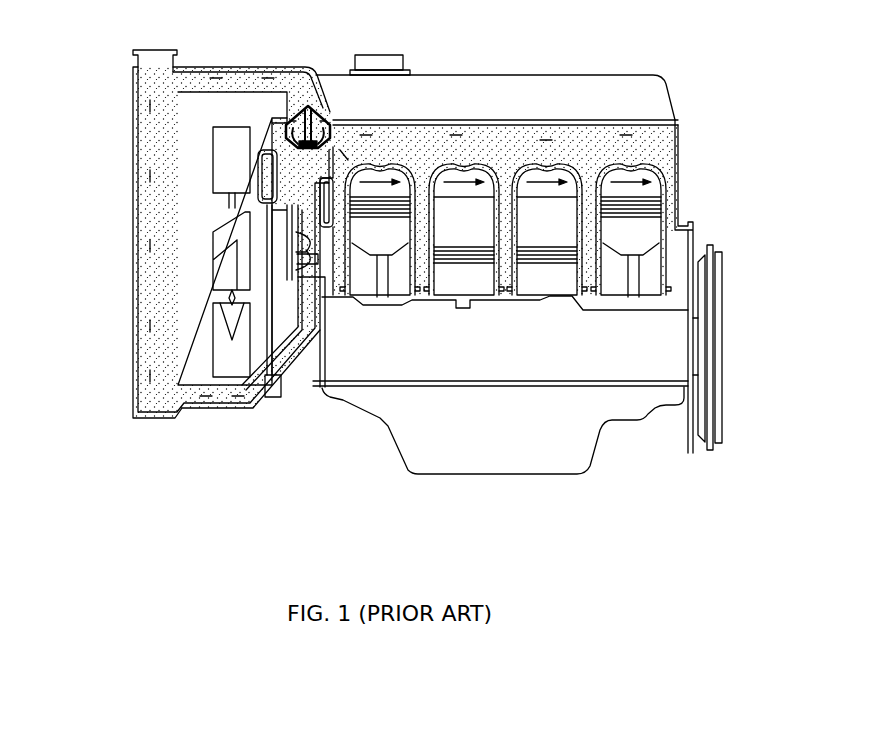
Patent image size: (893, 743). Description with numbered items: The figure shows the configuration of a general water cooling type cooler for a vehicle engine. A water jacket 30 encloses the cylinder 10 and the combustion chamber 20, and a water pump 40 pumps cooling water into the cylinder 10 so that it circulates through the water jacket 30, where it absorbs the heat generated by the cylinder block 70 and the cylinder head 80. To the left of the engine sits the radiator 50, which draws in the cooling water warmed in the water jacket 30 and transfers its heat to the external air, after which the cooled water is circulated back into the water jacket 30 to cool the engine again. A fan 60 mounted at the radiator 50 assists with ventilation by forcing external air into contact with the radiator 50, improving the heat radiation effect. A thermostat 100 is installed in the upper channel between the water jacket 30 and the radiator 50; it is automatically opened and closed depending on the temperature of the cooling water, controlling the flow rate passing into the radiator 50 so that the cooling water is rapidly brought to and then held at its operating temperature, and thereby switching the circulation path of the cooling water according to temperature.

The cylinder 10 is at (665, 202).
The combustion chamber 20 is at (541, 212).
The water jacket 30 is at (505, 268).
The water pump 40 is at (313, 388).
The radiator 50 is at (137, 213).
The fan 60 is at (225, 365).
The cylinder block 70 is at (630, 358).
The cylinder head 80 is at (617, 130).
The thermostat 100 is at (304, 104).